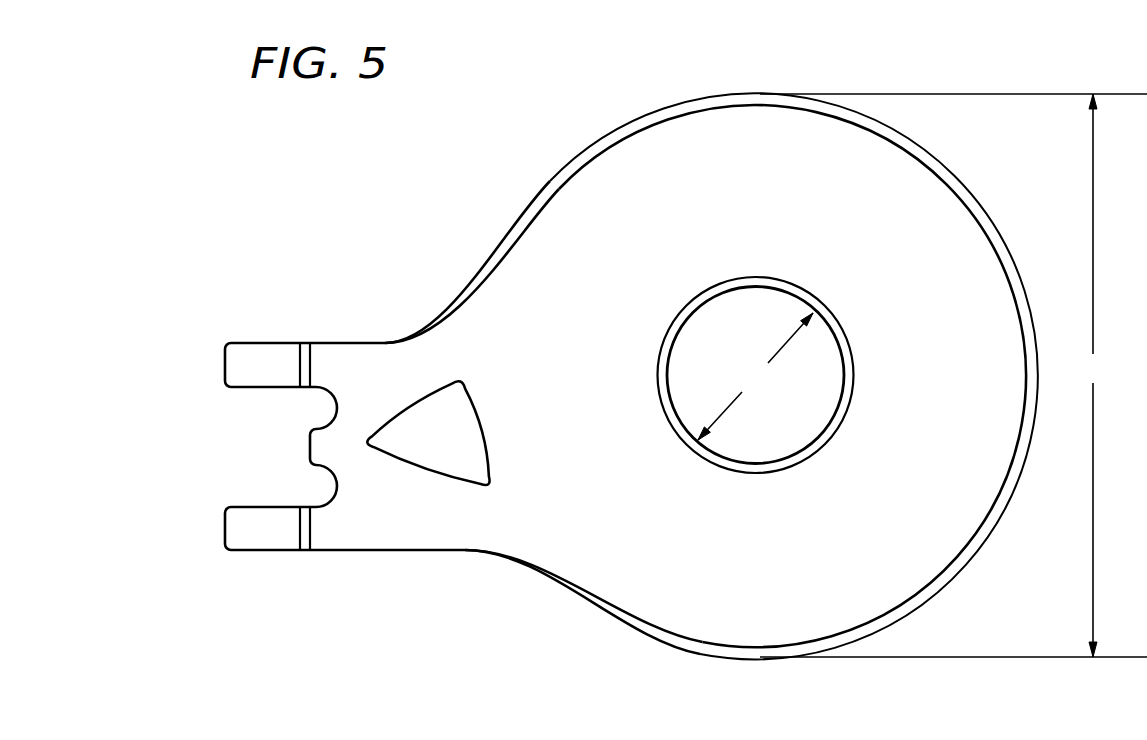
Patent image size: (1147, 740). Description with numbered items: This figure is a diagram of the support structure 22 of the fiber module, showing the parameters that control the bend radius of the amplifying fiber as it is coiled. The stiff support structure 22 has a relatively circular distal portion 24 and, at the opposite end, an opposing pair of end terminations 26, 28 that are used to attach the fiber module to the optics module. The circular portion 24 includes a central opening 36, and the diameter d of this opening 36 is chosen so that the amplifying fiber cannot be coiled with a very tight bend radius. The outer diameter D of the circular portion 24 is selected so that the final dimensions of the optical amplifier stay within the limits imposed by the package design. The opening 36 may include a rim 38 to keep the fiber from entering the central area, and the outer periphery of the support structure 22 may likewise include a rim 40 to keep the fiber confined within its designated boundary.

The support structure 22 is at (650, 376).
The circular portion 24 is at (597, 143).
The end termination 26 is at (250, 525).
The end termination 28 is at (250, 362).
The central opening 36 is at (805, 417).
The rim 38 is at (720, 462).
The rim 40 is at (530, 220).